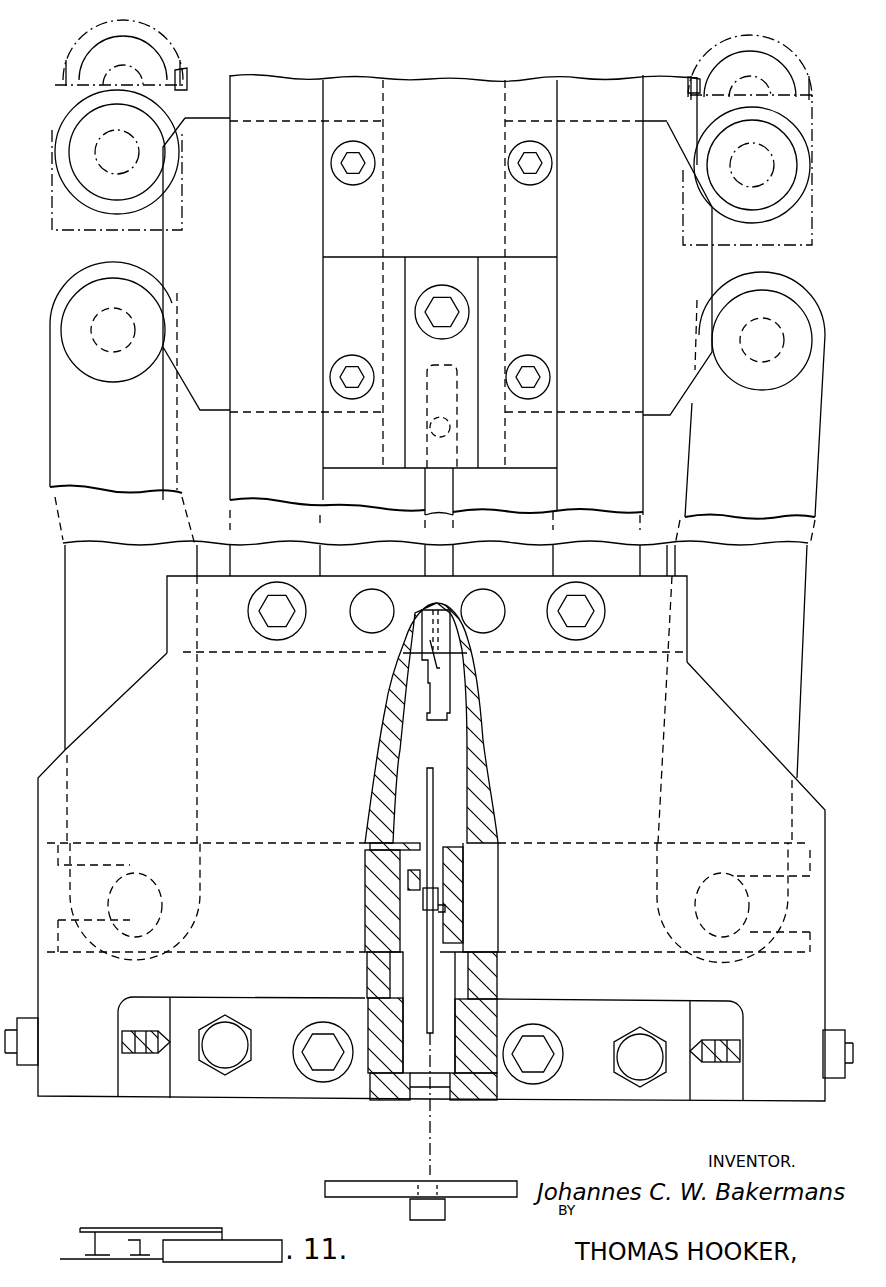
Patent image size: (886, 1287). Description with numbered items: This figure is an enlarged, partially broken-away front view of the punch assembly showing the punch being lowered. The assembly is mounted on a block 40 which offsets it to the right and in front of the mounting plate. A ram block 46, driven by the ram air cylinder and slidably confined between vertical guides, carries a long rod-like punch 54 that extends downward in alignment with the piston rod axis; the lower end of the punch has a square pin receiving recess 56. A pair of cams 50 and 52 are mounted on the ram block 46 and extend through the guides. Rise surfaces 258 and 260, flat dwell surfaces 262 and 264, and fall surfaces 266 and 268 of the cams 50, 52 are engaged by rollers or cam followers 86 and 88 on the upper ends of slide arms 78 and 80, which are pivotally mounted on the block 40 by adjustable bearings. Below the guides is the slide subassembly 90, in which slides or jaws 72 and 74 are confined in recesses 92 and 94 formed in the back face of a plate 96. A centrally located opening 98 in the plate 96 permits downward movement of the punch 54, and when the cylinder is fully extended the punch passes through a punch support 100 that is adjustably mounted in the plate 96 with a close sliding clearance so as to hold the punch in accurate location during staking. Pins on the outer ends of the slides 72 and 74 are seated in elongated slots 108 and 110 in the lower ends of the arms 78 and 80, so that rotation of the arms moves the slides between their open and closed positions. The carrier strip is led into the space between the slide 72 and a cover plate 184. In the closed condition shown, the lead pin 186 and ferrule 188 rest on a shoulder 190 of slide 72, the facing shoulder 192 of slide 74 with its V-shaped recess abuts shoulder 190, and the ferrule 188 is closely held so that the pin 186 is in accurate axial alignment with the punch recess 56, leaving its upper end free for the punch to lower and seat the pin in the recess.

The block 40 is at (205, 547).
The ram block 46 is at (430, 88).
The cam 50 is at (653, 230).
The cam 52 is at (213, 190).
The punch 54 is at (458, 557).
The pin receiving recess 56 is at (415, 700).
The slide 72 is at (375, 880).
The slide 74 is at (490, 875).
The slide arm 78 is at (795, 602).
The slide arm 80 is at (72, 628).
The roller 86 is at (795, 128).
The roller 88 is at (68, 108).
The slide subassembly 90 is at (815, 778).
The recess 92 is at (593, 850).
The recess 94 is at (240, 843).
The plate 96 is at (75, 1090).
The opening 98 is at (462, 690).
The punch support 100 is at (388, 1093).
The slot 108 is at (715, 875).
The slot 110 is at (130, 843).
The cover plate 184 is at (410, 845).
The lead pin 186 is at (438, 783).
The ferrule 188 is at (445, 910).
The shoulder 190 is at (415, 900).
The shoulder 192 is at (440, 900).
The rise surface 258 is at (680, 405).
The rise surface 260 is at (193, 403).
The dwell surface 262 is at (713, 247).
The dwell surface 264 is at (163, 247).
The fall surface 266 is at (650, 117).
The fall surface 268 is at (176, 135).